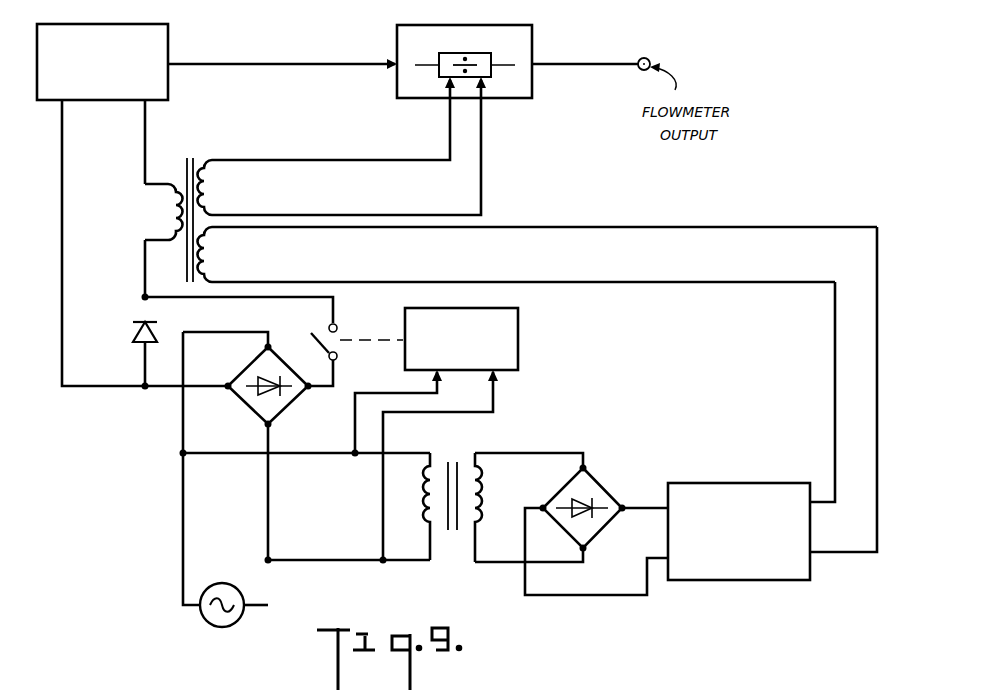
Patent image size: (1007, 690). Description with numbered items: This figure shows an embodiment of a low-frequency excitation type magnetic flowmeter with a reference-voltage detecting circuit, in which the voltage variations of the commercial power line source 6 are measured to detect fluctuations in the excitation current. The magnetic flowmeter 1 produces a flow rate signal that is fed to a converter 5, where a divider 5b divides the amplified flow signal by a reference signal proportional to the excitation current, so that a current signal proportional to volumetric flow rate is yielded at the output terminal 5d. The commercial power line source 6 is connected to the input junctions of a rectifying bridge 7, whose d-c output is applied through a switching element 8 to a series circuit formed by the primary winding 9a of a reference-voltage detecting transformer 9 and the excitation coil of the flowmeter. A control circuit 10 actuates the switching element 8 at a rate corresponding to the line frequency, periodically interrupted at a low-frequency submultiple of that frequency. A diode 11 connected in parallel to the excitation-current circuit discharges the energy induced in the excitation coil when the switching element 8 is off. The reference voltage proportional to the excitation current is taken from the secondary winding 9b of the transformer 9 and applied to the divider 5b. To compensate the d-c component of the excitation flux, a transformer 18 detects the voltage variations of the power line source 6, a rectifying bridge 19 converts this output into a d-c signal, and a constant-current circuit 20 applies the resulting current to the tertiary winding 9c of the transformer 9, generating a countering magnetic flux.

The magnetic flowmeter 1 is at (165, 28).
The converter 5 is at (397, 90).
The divider 5b is at (490, 77).
The output terminal 5d is at (650, 57).
The commercial power line source 6 is at (222, 627).
The rectifying bridge 7 is at (288, 400).
The switching element 8 is at (336, 340).
The reference-voltage detecting transformer 9 is at (193, 162).
The primary winding 9a is at (162, 209).
The secondary winding 9b is at (218, 200).
The tertiary winding 9c is at (225, 255).
The control circuit 10 is at (518, 313).
The diode 11 is at (133, 334).
The transformer 18 is at (455, 546).
The rectifying bridge 19 is at (598, 487).
The constant-current circuit 20 is at (757, 483).